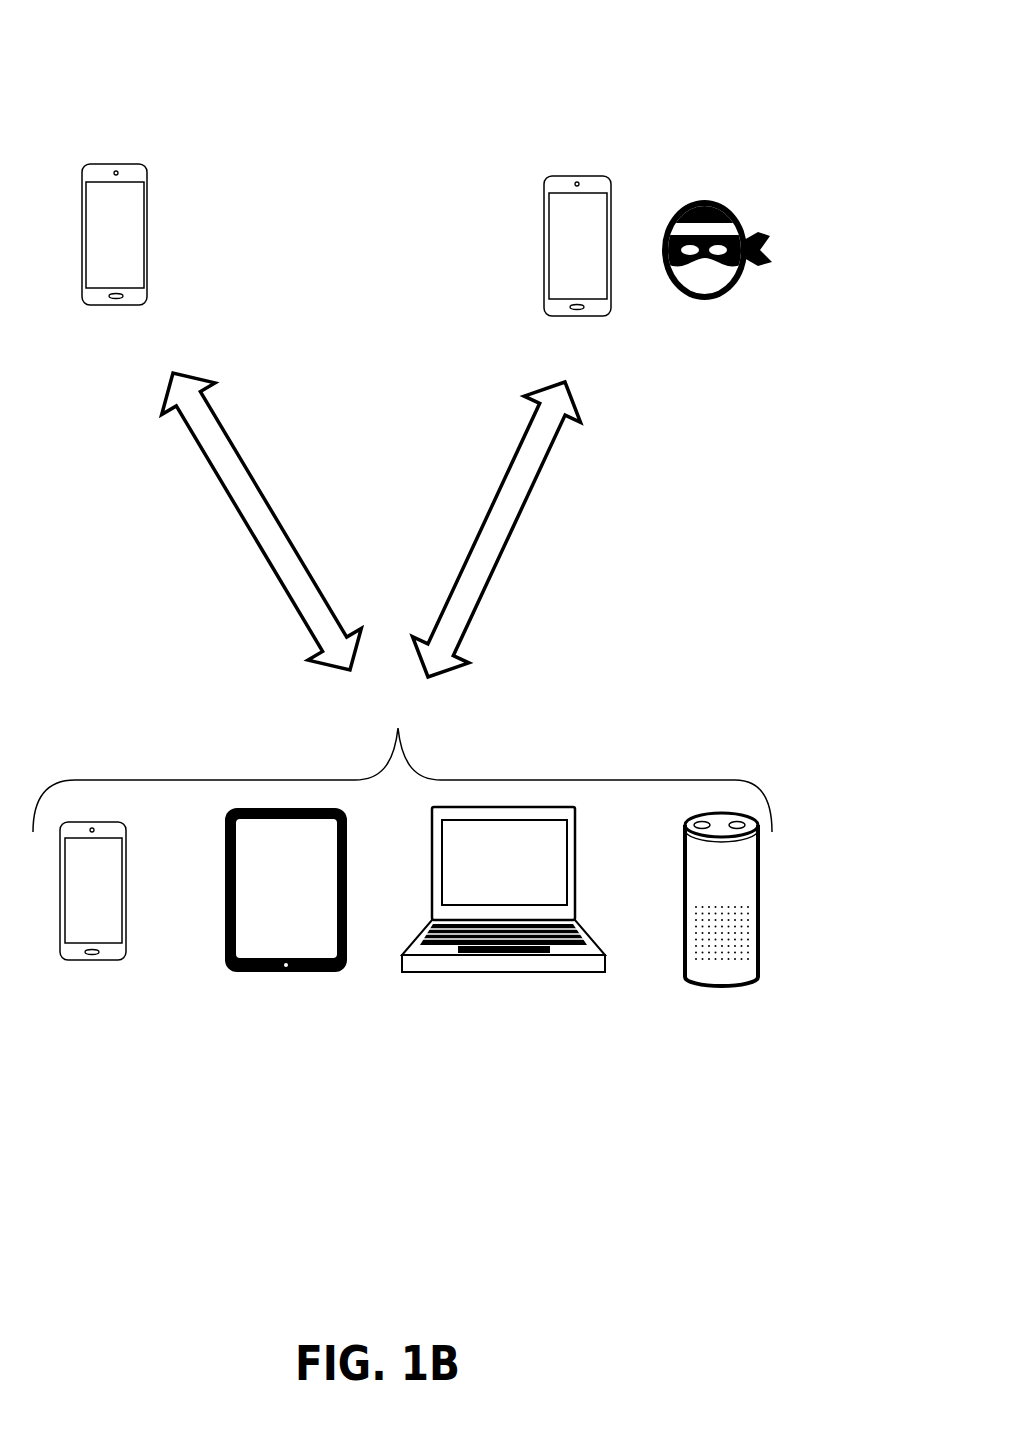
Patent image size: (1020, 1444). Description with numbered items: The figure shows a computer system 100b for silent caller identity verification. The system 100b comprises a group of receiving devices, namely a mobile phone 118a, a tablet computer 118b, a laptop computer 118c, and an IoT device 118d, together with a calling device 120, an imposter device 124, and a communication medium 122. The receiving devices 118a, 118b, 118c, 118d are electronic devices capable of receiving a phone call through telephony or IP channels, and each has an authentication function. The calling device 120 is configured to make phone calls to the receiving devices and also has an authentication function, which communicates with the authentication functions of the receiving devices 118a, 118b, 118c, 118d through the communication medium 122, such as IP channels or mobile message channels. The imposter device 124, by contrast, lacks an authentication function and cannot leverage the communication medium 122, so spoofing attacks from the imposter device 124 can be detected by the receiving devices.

The computer system 100b is at (805, 65).
The calling device 120 is at (133, 337).
The imposter device 124 is at (607, 351).
The communication medium 122 is at (483, 462).
The mobile phone 118a is at (111, 997).
The tablet computer 118b is at (320, 1007).
The laptop computer 118c is at (538, 1007).
The IoT device 118d is at (759, 1008).